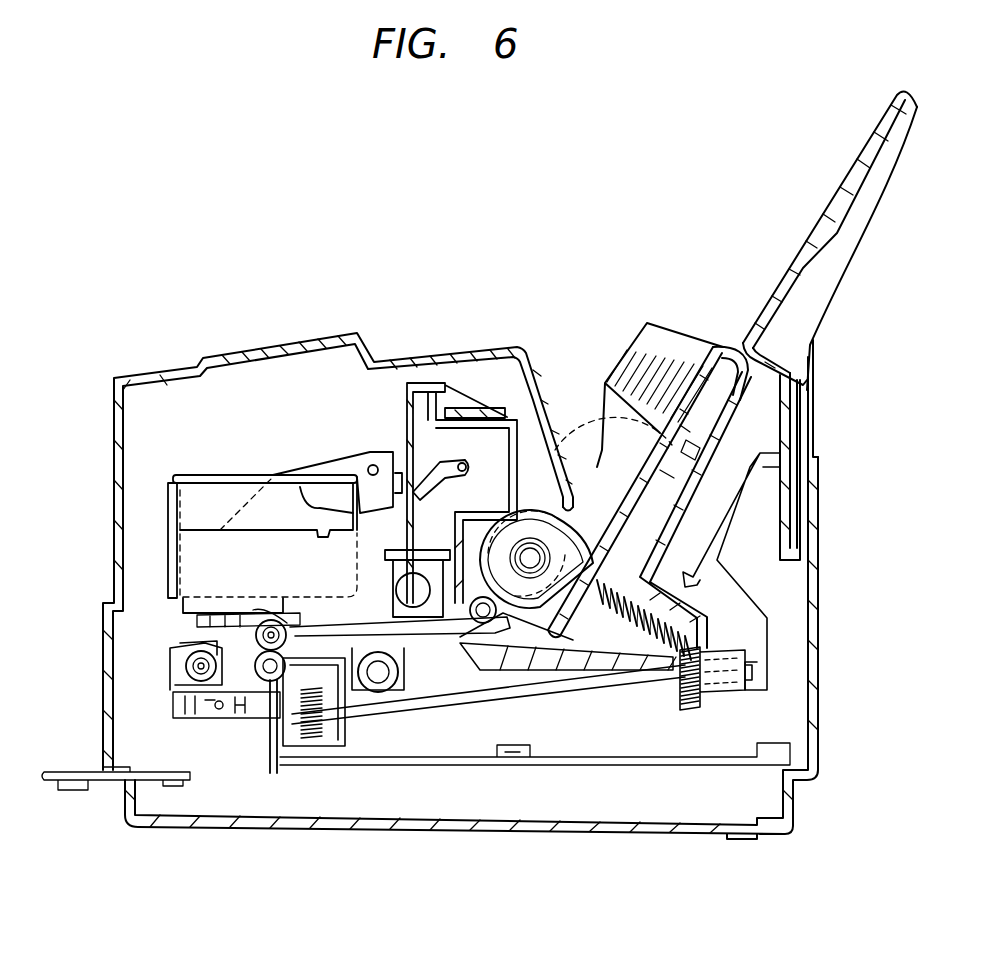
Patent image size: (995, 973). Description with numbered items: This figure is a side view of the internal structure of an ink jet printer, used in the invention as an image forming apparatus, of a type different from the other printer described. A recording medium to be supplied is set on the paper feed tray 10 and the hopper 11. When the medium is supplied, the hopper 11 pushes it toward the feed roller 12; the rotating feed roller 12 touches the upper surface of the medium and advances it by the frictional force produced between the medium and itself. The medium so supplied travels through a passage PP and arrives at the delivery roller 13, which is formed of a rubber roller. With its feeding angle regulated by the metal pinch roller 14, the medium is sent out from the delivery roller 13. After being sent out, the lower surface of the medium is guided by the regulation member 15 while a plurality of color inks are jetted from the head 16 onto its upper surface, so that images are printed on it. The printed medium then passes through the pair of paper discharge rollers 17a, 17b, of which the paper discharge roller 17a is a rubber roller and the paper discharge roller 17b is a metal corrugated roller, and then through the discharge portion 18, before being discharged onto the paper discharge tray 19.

The paper feed tray 10 is at (792, 258).
The hopper 11 is at (662, 432).
The feed roller 12 is at (530, 503).
The delivery roller 13 is at (380, 693).
The pinch roller 14 is at (412, 642).
The regulation member 15 is at (335, 632).
The head 16 is at (322, 632).
The paper discharge roller 17a is at (265, 678).
The paper discharge roller 17b is at (272, 620).
The discharge portion 18 is at (177, 643).
The paper discharge tray 19 is at (62, 770).
The passage PP is at (510, 633).